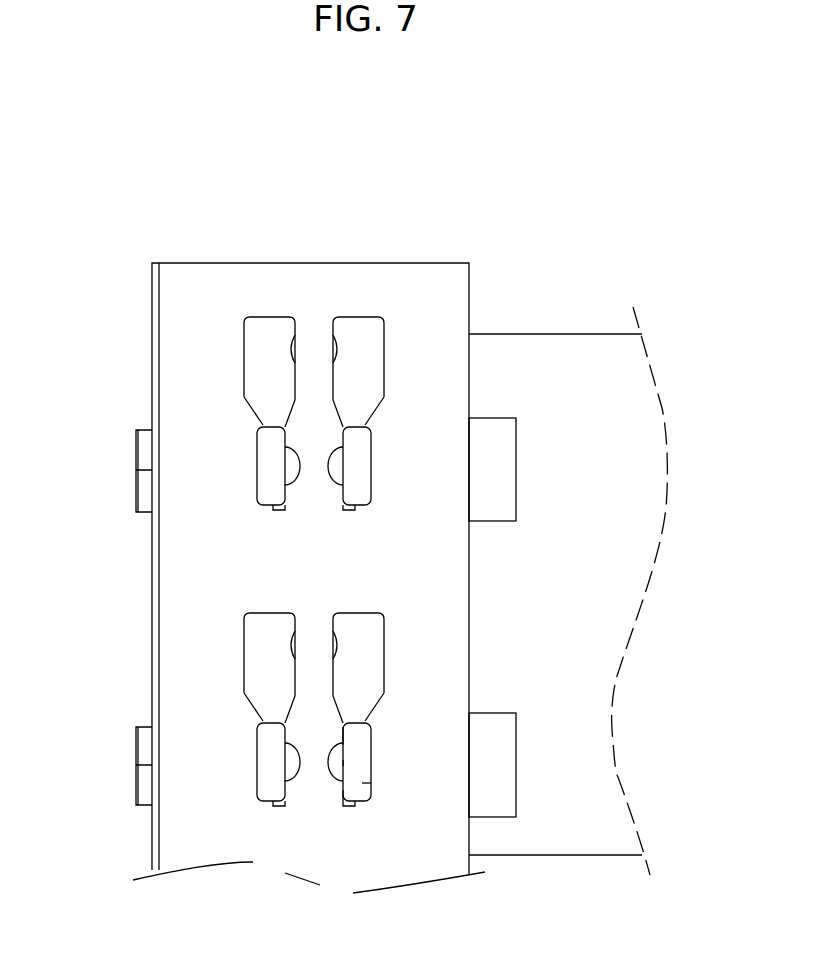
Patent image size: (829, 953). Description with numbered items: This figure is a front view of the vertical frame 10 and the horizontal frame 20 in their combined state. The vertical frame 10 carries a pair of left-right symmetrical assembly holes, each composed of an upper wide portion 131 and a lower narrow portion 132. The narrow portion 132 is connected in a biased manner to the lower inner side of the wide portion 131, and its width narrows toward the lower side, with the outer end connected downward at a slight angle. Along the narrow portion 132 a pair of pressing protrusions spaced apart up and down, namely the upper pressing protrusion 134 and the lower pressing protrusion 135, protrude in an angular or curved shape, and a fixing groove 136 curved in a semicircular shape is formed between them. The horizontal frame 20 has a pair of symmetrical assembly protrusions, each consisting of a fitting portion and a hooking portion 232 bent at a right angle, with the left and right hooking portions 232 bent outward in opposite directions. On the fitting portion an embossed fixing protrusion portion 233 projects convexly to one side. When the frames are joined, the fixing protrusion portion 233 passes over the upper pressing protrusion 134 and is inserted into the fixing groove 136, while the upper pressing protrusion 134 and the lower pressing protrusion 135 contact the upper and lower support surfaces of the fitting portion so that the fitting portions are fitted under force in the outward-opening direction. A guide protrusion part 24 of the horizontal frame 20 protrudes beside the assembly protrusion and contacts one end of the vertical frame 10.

The vertical frame 10 is at (303, 253).
The horizontal frame 20 is at (555, 322).
The guide protrusion part 24 is at (493, 778).
The wide portion 131 is at (354, 676).
The narrow portion 132 is at (340, 732).
The upper pressing protrusion 134 is at (340, 740).
The lower pressing protrusion 135 is at (335, 793).
The fixing groove 136 is at (330, 748).
The hooking portion 232 is at (362, 783).
The fixing protrusion portion 233 is at (340, 762).